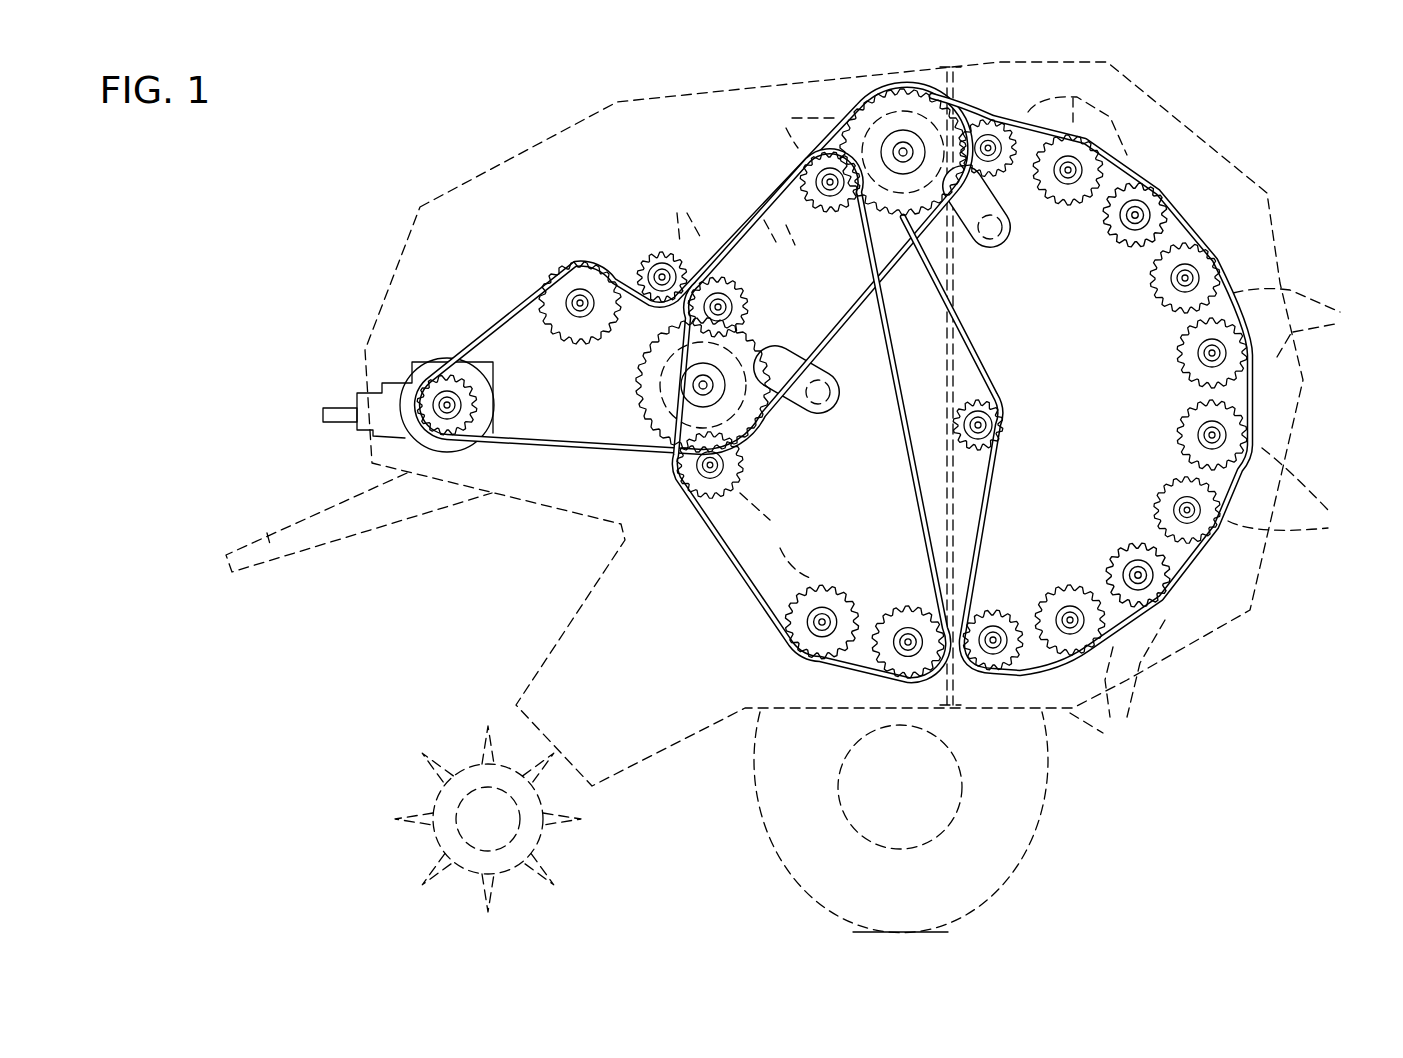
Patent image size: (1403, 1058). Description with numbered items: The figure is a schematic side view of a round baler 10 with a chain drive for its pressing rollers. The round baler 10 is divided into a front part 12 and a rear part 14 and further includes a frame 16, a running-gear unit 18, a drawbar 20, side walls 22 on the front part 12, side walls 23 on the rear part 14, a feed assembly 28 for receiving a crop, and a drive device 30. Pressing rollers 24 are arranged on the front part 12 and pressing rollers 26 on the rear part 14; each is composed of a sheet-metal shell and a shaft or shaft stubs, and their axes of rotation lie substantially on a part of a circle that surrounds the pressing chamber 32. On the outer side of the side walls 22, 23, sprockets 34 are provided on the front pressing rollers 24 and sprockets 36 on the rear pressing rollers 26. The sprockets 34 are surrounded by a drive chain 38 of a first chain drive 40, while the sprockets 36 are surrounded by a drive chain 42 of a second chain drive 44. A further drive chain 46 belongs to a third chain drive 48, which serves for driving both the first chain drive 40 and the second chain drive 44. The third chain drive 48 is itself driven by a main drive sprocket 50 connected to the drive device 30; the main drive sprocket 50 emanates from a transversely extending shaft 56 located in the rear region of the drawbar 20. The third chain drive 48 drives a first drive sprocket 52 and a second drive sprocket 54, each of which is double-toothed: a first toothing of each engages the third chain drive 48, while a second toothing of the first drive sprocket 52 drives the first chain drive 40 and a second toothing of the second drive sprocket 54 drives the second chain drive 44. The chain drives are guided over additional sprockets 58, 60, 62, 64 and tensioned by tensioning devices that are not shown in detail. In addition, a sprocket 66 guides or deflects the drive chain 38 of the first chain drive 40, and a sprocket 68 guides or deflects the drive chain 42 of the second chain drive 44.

The round baler 10 is at (1292, 190).
The front part 12 is at (528, 107).
The rear part 14 is at (1146, 72).
The frame 16 is at (580, 473).
The running-gear unit 18 is at (1072, 797).
The drawbar 20 is at (258, 530).
The side walls 22 is at (583, 172).
The side walls 23 is at (1045, 341).
The pressing rollers 24 is at (748, 339).
The pressing rollers 26 is at (1205, 410).
The feed assembly 28 is at (658, 772).
The drive device 30 is at (432, 362).
The pressing chamber 32 is at (1060, 248).
The sprockets 34 is at (905, 89).
The sprockets 36 is at (992, 120).
The drive chain 38 is at (925, 518).
The first chain drive 40 is at (732, 575).
The drive chain 42 is at (1196, 242).
The second chain drive 44 is at (1226, 247).
The drive chain 46 is at (500, 318).
The third chain drive 48 is at (522, 290).
The main drive sprocket 50 is at (478, 408).
The first drive sprocket 52 is at (640, 398).
The second drive sprocket 54 is at (871, 92).
The shaft 56 is at (413, 378).
The sprocket 58 is at (562, 330).
The sprocket 60 is at (648, 262).
The sprocket 62 is at (782, 245).
The sprocket 64 is at (990, 402).
The sprocket 66 is at (832, 414).
The sprocket 68 is at (998, 250).